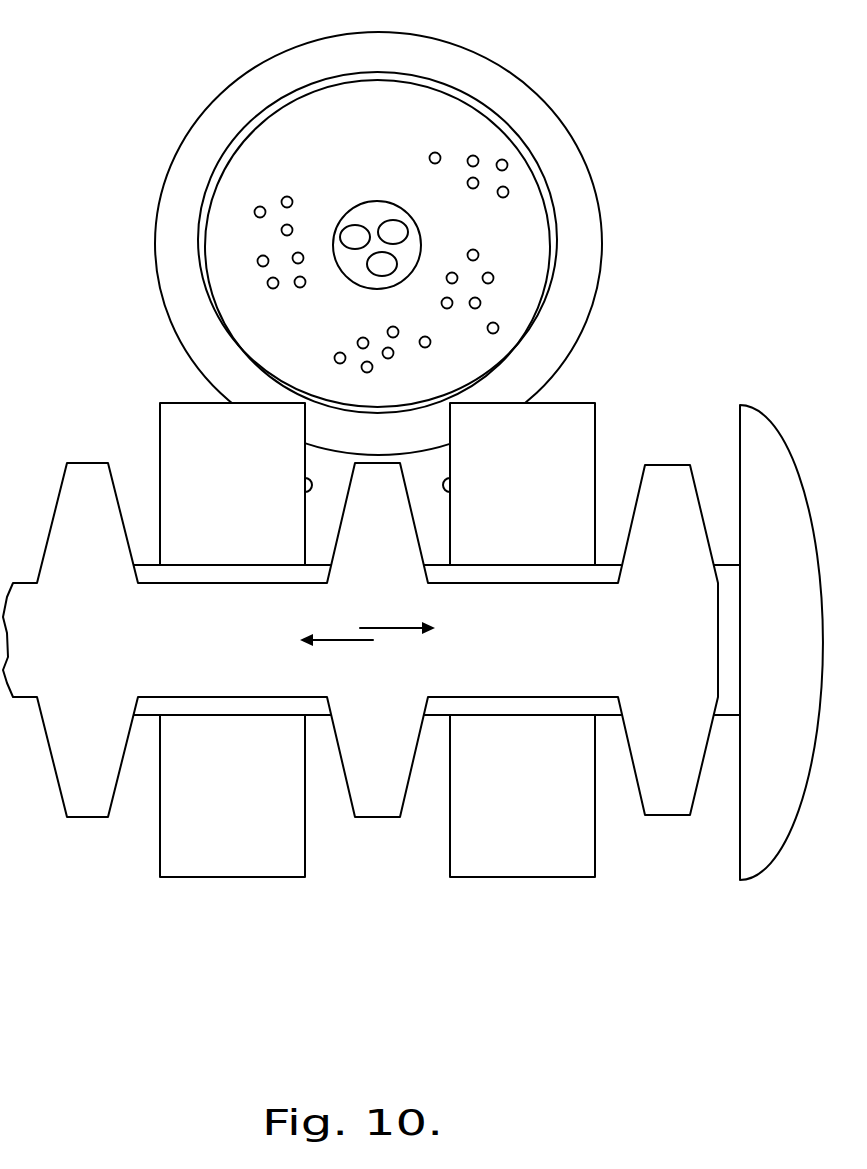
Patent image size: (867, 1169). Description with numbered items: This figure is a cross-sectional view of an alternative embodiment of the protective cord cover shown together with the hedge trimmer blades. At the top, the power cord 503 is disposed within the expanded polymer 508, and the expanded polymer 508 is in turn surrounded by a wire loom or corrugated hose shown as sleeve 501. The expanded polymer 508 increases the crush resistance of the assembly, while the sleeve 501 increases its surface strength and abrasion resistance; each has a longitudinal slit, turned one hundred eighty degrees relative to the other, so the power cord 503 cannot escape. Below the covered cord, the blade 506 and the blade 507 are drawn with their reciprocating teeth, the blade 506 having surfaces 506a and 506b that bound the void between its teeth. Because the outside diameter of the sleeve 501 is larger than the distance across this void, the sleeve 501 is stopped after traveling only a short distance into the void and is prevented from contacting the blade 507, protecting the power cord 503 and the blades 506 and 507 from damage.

The sleeve 501 is at (212, 101).
The power cord 503 is at (436, 232).
The expanded polymer 508 is at (410, 152).
The clamp block 506 is at (253, 530).
The first hook 506a is at (305, 476).
The second hook 506b is at (450, 477).
The shaft 507 is at (398, 595).